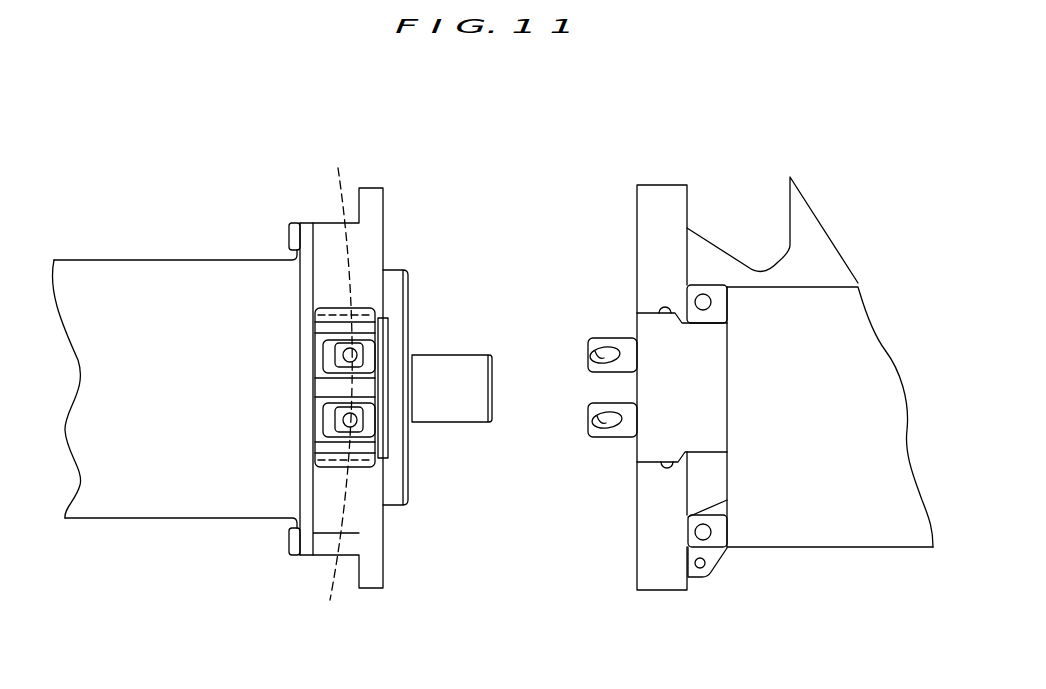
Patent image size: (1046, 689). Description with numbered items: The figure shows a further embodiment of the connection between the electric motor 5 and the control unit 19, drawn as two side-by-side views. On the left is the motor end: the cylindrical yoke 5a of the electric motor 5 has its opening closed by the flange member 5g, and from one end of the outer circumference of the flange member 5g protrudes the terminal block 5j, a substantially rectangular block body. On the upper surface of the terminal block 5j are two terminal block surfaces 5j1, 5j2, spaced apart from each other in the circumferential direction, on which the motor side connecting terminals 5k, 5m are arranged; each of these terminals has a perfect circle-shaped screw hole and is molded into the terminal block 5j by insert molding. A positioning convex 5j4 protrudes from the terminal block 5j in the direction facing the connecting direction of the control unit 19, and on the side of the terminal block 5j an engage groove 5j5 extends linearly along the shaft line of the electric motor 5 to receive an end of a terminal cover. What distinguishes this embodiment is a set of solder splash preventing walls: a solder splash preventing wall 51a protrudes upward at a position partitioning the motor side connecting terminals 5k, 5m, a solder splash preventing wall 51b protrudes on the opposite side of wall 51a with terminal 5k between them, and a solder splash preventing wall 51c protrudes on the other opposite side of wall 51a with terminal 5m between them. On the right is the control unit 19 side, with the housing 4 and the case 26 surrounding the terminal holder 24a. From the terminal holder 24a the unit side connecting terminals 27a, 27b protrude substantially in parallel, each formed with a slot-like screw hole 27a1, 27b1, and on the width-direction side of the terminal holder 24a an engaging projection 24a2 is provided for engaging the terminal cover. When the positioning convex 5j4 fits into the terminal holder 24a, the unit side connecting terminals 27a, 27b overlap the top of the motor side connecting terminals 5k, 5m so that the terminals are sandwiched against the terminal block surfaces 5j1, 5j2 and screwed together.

The electric motor 5 is at (124, 259).
The cylindrical yoke 5a is at (117, 495).
The flange member 5g is at (365, 515).
The terminal block 5j is at (357, 467).
The terminal block surface 5j1 is at (333, 362).
The terminal block surface 5j2 is at (325, 413).
The positioning convex 5j4 is at (388, 322).
The engage groove 5j5 is at (337, 389).
The motor side connecting terminal 5k is at (323, 353).
The motor side connecting terminal 5m is at (337, 427).
The solder splash preventing wall 51a is at (360, 388).
The solder splash preventing wall 51b is at (360, 328).
The solder splash preventing wall 51c is at (361, 452).
The housing 4 is at (805, 233).
The motor case 26 is at (865, 358).
The control unit 19 is at (858, 548).
The terminal holder 24a is at (685, 387).
The engaging projection 24a2 is at (660, 306).
The unit side connecting terminal 27a is at (628, 338).
The slot-like screw hole 27a1 is at (594, 352).
The unit side connecting terminal 27b is at (626, 437).
The slot-like screw hole 27b1 is at (592, 422).